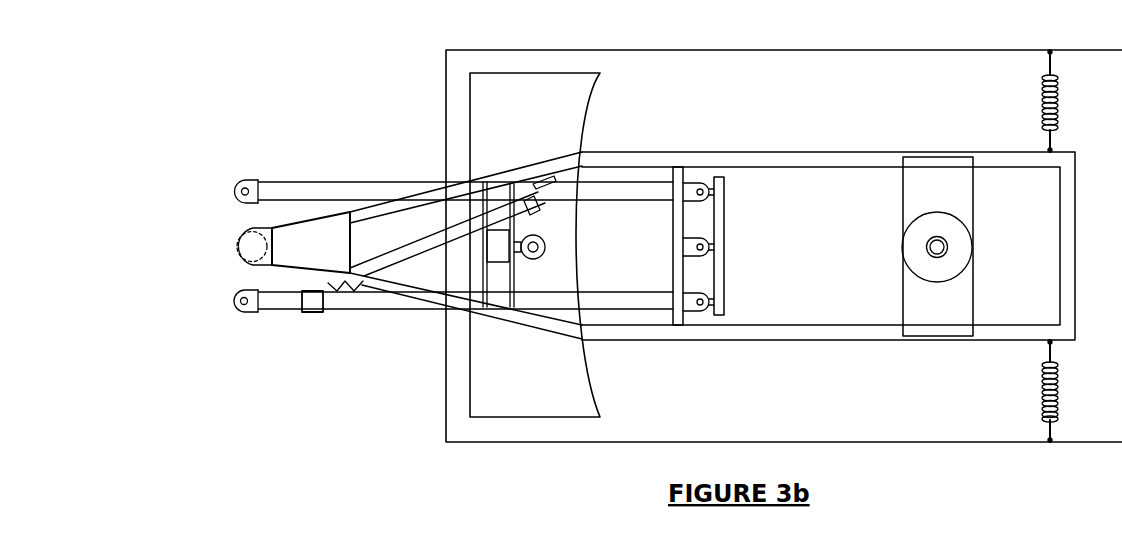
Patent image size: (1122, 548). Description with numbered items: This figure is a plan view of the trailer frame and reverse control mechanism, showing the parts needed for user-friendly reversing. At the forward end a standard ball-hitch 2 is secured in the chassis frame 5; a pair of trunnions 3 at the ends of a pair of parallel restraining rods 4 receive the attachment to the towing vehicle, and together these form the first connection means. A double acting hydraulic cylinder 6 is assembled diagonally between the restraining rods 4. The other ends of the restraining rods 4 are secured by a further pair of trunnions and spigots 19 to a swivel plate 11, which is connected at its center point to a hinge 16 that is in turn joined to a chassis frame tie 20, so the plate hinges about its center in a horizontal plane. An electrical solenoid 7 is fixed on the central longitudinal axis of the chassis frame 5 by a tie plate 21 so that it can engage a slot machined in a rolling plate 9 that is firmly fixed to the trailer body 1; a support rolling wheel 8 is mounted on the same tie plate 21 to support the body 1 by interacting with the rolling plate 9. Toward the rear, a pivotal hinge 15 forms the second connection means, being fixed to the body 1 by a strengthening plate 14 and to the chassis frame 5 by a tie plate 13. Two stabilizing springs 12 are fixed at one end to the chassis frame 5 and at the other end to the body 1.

The trailer body 1 is at (780, 50).
The ball-hitch 2 is at (240, 238).
The trunnions 3 is at (237, 184).
The restraining rods 4 is at (316, 182).
The chassis frame 5 is at (740, 152).
The double acting hydraulic cylinder 6 is at (416, 228).
The electrical solenoid 7 is at (547, 251).
The support rolling wheel 8 is at (494, 230).
The rolling plate 9 is at (468, 370).
The swivel plate 11 is at (726, 248).
The stabilizing springs 12 is at (1043, 96).
The tie plate 13 is at (937, 283).
The strengthening plate 14 is at (942, 172).
The pivotal hinge 15 is at (947, 240).
The hinge 16 is at (702, 246).
The trunnions and spigots 19 is at (698, 183).
The chassis frame tie 20 is at (672, 262).
The tie plate 21 is at (446, 292).